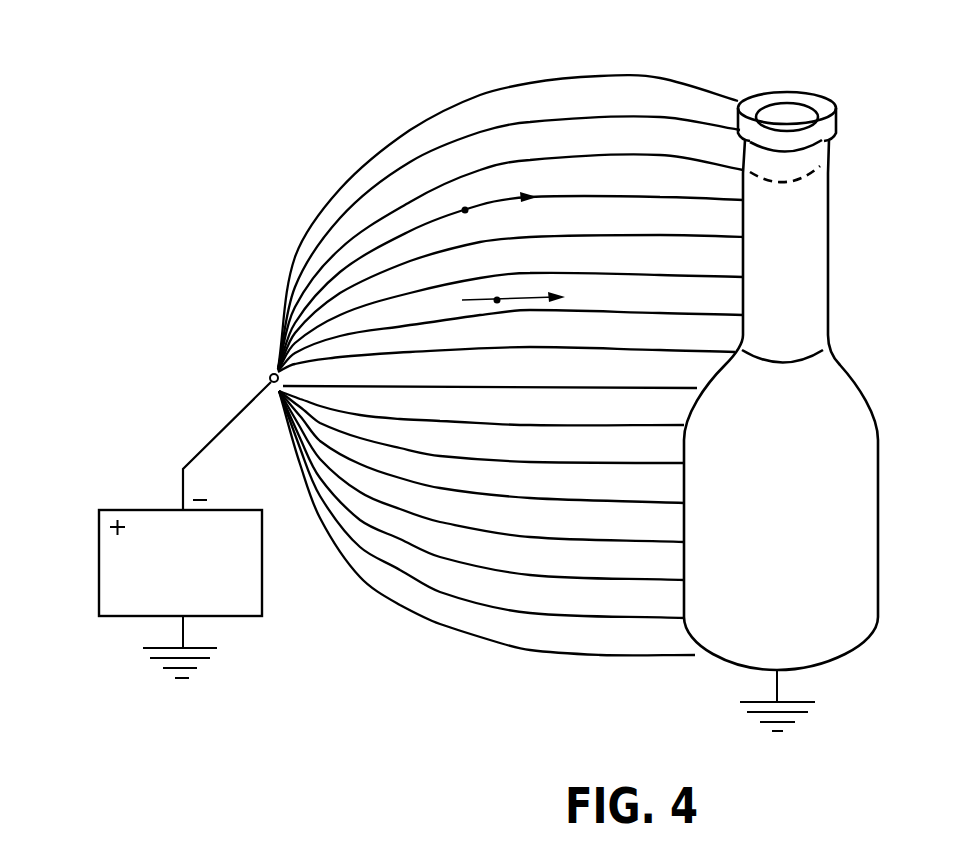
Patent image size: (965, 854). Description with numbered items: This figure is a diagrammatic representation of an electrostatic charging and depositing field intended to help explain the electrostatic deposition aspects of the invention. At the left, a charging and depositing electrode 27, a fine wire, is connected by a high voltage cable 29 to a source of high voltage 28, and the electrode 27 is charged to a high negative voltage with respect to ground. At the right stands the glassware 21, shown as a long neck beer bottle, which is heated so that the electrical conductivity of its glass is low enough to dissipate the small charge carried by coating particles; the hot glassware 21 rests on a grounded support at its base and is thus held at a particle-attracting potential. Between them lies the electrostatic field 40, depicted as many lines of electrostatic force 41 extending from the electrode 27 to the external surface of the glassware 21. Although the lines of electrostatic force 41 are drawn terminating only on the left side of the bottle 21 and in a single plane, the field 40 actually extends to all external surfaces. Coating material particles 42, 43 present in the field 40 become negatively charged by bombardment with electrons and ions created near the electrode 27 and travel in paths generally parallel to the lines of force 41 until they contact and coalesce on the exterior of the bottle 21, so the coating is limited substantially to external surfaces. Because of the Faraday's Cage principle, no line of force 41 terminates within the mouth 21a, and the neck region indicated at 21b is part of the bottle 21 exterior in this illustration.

The glassware 21 is at (872, 386).
The mouth 21a is at (786, 93).
The bottle neck 21b is at (860, 105).
The charging and depositing electrode 27 is at (267, 372).
The source of high voltage 28 is at (120, 509).
The high voltage cable 29 is at (197, 447).
The electrostatic field 40 is at (508, 688).
The lines of electrostatic force 41 is at (407, 130).
The coating material particle 42 is at (462, 208).
The coating material particle 43 is at (494, 298).